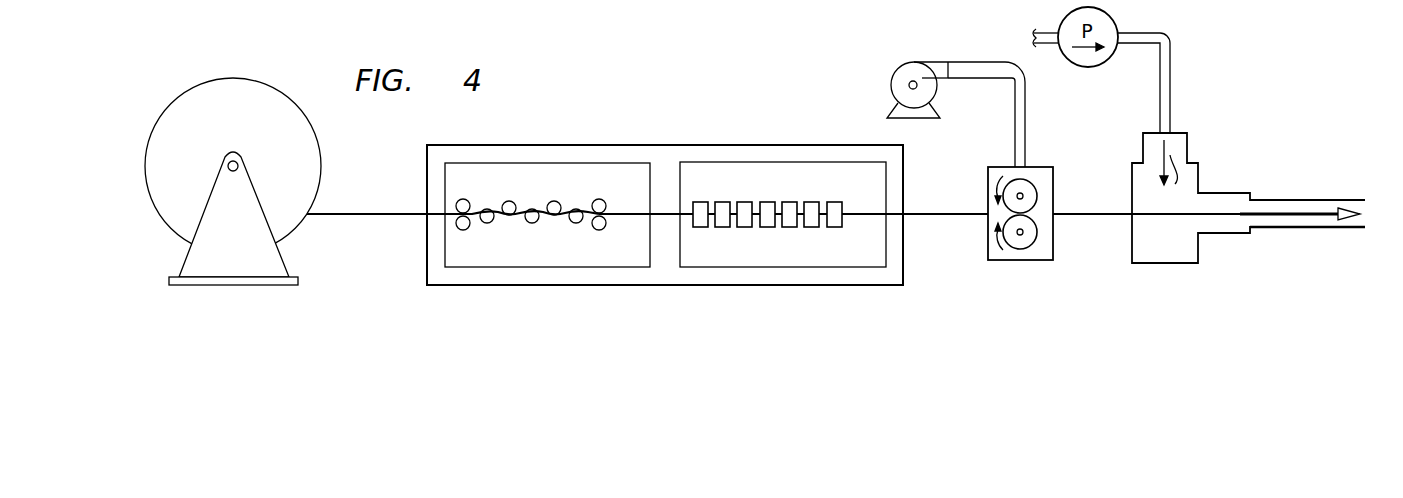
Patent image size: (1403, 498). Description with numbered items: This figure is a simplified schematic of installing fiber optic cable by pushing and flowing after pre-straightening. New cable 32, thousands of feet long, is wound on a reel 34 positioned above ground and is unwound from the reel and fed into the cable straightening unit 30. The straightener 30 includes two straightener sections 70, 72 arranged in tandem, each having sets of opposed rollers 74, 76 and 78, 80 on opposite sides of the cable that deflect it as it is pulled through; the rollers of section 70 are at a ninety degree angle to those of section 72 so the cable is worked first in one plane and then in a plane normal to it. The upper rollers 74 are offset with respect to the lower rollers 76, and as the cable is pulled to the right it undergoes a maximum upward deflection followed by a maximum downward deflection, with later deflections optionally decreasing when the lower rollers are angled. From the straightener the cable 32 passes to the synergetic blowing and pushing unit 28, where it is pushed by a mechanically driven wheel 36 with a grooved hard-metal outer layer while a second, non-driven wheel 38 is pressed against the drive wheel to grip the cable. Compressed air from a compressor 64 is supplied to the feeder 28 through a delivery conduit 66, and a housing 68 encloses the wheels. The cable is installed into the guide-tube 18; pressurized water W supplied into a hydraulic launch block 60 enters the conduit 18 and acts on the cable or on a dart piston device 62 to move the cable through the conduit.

The guide-tube 18 is at (1310, 228).
The synergetic blowing and pushing unit 28 is at (1032, 202).
The cable straightening unit 30 is at (662, 139).
The cable 32 is at (380, 213).
The reel 34 is at (232, 78).
The drive wheel 36 is at (1022, 250).
The second wheel 38 is at (1038, 193).
The hydraulic launch block 60 is at (1200, 178).
The dart piston device 62 is at (1350, 205).
The compressor 64 is at (892, 84).
The delivery conduit 66 is at (1027, 115).
The drive housing 68 is at (1053, 240).
The first straightener section 70 is at (546, 157).
The second straightener section 72 is at (786, 157).
The upper rollers 74 is at (463, 199).
The lower rollers 76 is at (463, 230).
The rollers 78 is at (700, 228).
The rollers 80 is at (722, 202).